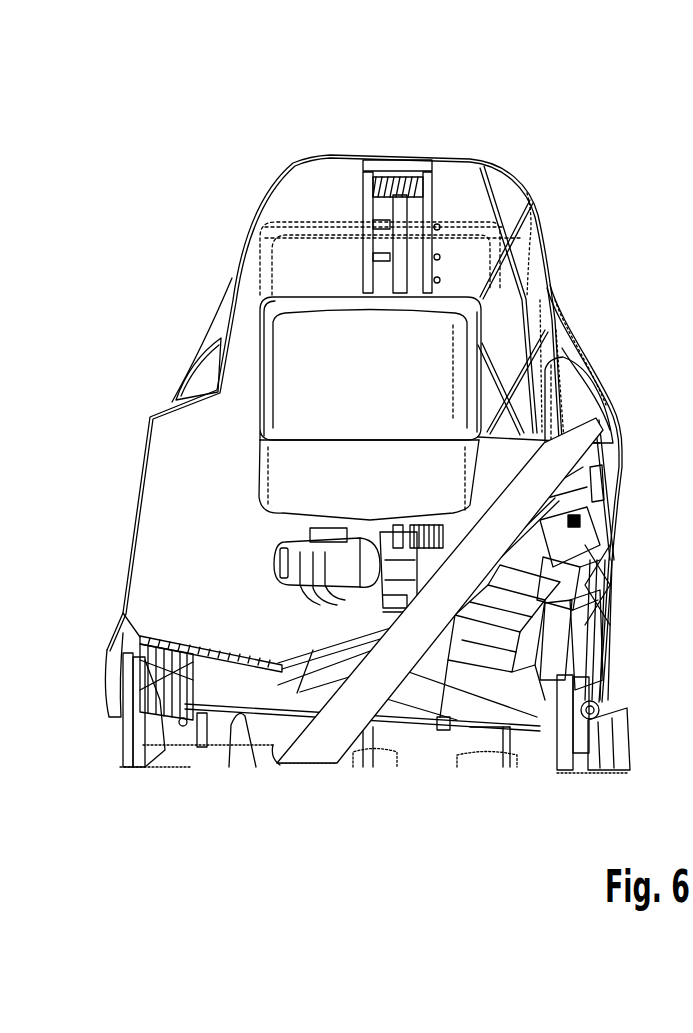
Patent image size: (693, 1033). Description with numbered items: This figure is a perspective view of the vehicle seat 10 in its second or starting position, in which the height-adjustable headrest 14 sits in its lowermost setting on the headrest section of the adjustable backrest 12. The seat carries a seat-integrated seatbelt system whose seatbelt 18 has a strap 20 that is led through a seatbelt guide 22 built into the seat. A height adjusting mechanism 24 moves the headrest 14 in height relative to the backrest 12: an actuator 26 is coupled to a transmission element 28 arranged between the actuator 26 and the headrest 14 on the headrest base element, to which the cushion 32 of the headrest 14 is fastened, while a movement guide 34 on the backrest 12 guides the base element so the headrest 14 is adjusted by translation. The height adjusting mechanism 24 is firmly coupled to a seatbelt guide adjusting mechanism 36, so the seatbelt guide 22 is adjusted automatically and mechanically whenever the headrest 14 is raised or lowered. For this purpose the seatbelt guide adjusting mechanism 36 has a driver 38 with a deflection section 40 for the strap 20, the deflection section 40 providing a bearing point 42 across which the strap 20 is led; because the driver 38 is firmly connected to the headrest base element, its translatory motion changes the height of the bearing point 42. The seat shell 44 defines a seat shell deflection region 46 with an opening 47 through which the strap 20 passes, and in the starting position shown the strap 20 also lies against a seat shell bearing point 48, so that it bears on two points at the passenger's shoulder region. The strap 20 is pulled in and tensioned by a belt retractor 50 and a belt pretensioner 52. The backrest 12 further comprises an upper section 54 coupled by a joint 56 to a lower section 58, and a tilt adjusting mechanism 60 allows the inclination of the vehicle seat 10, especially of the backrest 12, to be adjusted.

The vehicle seat 10 is at (177, 133).
The backrest 12 is at (138, 480).
The headrest 14 is at (330, 272).
The seatbelt 18 is at (297, 768).
The strap 20 is at (327, 743).
The seatbelt guide 22 is at (583, 418).
The height adjusting mechanism 24 is at (245, 472).
The actuator 26 is at (290, 567).
The transmission element 28 is at (414, 205).
The cushion 32 is at (295, 315).
The movement guide 34 is at (427, 293).
The seatbelt guide adjusting mechanism 36 is at (520, 407).
The driver 38 is at (473, 455).
The deflection section 40 is at (561, 450).
The bearing point 42 is at (603, 483).
The seat shell 44 is at (190, 352).
The seat shell deflection region 46 is at (609, 320).
The opening 47 is at (589, 350).
The seat shell bearing point 48 is at (561, 424).
The belt retractor 50 is at (487, 656).
The belt pretensioner 52 is at (524, 582).
The upper section 54 is at (125, 638).
The joint 56 is at (104, 719).
The lower section 58 is at (137, 760).
The tilt adjusting mechanism 60 is at (118, 763).